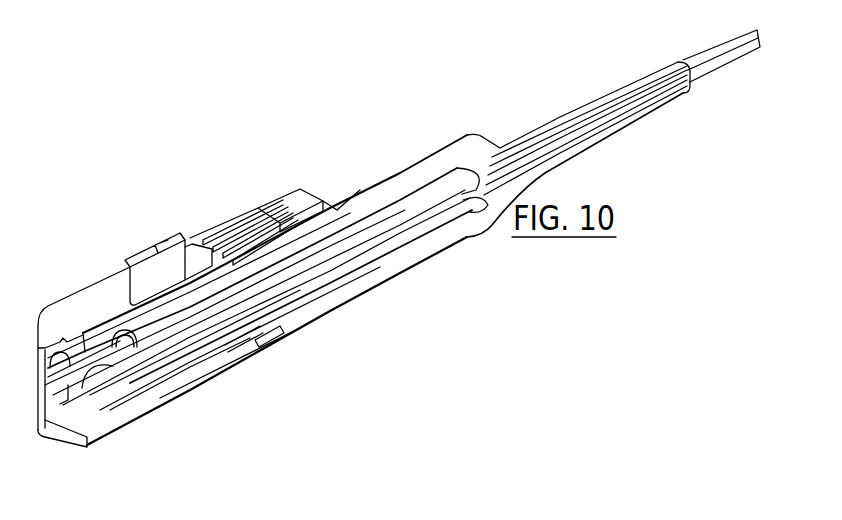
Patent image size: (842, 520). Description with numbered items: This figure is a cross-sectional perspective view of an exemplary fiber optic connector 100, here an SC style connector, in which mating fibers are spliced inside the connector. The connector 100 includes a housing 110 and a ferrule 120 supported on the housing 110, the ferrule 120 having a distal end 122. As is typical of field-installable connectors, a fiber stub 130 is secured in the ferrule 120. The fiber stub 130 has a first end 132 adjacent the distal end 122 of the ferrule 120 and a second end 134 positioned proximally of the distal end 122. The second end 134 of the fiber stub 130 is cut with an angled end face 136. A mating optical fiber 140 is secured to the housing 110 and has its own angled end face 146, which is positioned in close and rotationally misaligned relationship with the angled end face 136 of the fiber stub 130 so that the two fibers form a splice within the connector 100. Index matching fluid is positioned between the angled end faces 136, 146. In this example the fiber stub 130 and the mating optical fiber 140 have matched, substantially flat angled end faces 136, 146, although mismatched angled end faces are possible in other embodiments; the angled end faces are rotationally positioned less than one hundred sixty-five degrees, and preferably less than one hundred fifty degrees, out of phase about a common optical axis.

The connector 100 is at (189, 186).
The housing 110 is at (77, 307).
The ferrule 120 is at (90, 398).
The distal end 122 is at (48, 412).
The fiber stub 130 is at (206, 370).
The first end 132 is at (72, 404).
The second end 134 is at (238, 340).
The angled end face 136 is at (252, 353).
The mating optical fiber 140 is at (703, 56).
The angled end face 146 is at (268, 334).